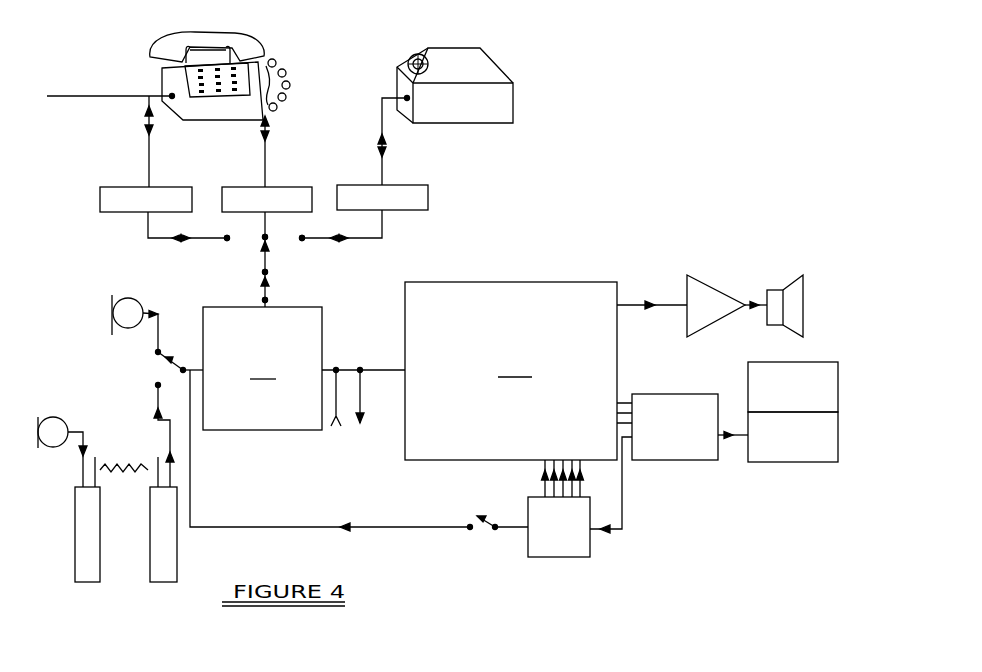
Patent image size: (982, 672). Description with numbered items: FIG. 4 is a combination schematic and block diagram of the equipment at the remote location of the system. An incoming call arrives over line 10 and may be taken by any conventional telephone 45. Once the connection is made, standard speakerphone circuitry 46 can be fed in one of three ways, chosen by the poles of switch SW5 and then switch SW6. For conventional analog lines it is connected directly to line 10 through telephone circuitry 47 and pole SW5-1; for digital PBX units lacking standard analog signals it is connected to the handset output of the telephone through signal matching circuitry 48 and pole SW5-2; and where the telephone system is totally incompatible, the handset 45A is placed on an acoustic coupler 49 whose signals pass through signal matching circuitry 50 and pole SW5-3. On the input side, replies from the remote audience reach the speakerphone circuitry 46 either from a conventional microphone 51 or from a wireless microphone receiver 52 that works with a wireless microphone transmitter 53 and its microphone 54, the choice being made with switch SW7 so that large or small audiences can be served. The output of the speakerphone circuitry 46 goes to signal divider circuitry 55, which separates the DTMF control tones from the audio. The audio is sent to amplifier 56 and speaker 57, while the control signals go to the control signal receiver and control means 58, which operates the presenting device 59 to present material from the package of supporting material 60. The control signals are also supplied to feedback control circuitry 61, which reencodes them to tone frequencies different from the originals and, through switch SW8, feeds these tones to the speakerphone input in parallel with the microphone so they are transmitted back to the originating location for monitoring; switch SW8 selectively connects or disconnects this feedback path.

The line 10 is at (107, 93).
The telephone 45 is at (243, 108).
The handset 45A is at (212, 30).
The speakerphone circuitry 46 is at (262, 368).
The telephone circuitry 47 is at (118, 185).
The signal matching circuitry 48 is at (250, 184).
The acoustic coupler 49 is at (505, 65).
The signal matching circuitry 50 is at (369, 185).
The microphone 51 is at (110, 312).
The wireless microphone receiver 52 is at (164, 593).
The wireless microphone transmitter 53 is at (84, 588).
The microphone 54 is at (67, 417).
The signal divider circuitry 55 is at (511, 371).
The amplifier 56 is at (722, 284).
The speaker 57 is at (773, 285).
The control signal receiver and control means 58 is at (660, 468).
The presenting device 59 is at (843, 452).
The package of supporting material 60 is at (842, 388).
The feedback control circuitry 61 is at (592, 545).
The switch SW5 is at (270, 260).
The switch pole SW5-1 is at (220, 244).
The switch pole SW5-2 is at (262, 237).
The switch pole SW5-3 is at (294, 220).
The switch SW6 is at (272, 295).
The switch SW7 is at (158, 367).
The switch SW8 is at (478, 535).